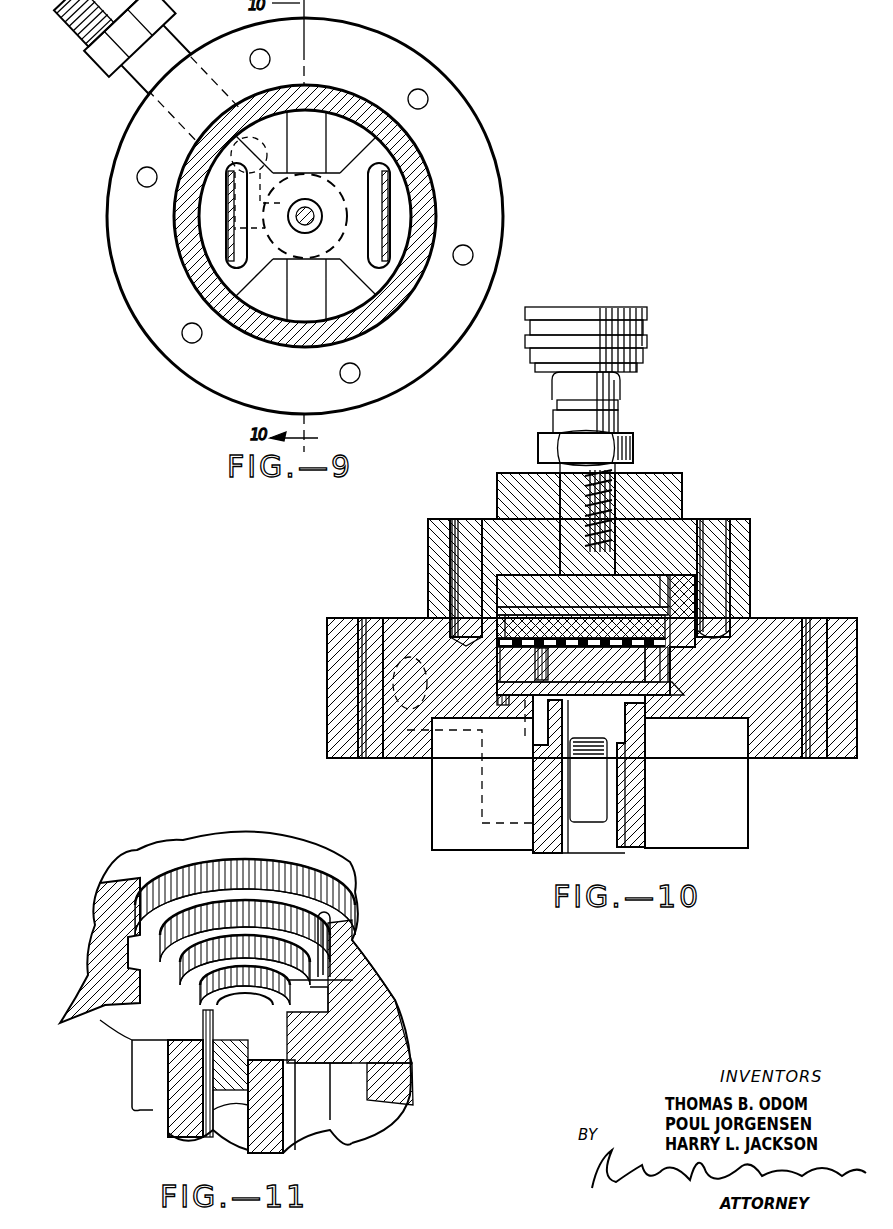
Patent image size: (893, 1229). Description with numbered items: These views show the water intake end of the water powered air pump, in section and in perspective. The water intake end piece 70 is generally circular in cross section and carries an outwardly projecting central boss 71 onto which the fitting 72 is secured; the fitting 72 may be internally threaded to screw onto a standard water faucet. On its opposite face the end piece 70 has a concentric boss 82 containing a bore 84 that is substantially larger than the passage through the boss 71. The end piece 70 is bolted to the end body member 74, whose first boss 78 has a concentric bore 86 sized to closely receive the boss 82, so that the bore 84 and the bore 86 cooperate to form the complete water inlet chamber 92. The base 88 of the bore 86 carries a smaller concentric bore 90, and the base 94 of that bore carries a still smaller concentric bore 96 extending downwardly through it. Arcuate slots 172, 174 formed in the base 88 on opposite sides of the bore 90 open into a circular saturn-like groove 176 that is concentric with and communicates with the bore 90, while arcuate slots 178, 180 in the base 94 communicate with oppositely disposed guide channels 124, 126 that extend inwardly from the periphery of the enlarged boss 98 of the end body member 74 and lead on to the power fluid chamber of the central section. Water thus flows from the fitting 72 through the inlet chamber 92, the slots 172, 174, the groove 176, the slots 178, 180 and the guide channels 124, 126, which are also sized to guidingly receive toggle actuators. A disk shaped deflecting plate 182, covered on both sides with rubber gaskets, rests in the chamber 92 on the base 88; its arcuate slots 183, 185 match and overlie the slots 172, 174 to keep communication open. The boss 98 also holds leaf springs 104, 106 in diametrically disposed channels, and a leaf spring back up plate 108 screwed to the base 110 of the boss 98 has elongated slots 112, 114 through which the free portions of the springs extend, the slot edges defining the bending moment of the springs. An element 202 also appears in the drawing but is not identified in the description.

In FIG. 10, the water intake end piece 70 is at (750, 536).
In FIG. 10, the boss 71 is at (682, 492).
In FIG. 10, the fitting 72 is at (645, 344).
In FIG. 10, the end body member 74 is at (732, 633).
In FIG. 11, the first boss 78 is at (340, 952).
In FIG. 10, the boss 82 is at (514, 601).
In FIG. 10, the bore 84 is at (600, 607).
In FIG. 10, the bore 86 is at (492, 585).
In FIG. 11, the bore 86 is at (160, 882).
In FIG. 10, the base of bore 88 is at (502, 643).
In FIG. 11, the base of bore 88 is at (190, 910).
In FIG. 10, the bore 90 is at (639, 679).
In FIG. 11, the bore 90 is at (188, 912).
In FIG. 10, the water inlet chamber 92 is at (635, 607).
In FIG. 10, the base of bore 94 is at (533, 695).
In FIG. 11, the base of bore 94 is at (233, 988).
In FIG. 10, the bore 96 is at (605, 852).
In FIG. 11, the bore 96 is at (132, 1090).
In FIG. 10, the enlarged boss 98 is at (750, 792).
In FIG. 11, the enlarged boss 98 is at (183, 1137).
In FIG. 9, the leaf spring 104 is at (238, 224).
In FIG. 9, the leaf spring 106 is at (405, 221).
In FIG. 9, the leaf spring back up plate 108 is at (353, 182).
In FIG. 9, the base of boss 110 is at (350, 131).
In FIG. 9, the elongated slot 112 is at (383, 188).
In FIG. 9, the elongated slot 114 is at (238, 190).
In FIG. 9, the guide channel 124 is at (306, 122).
In FIG. 10, the guide channel 124 is at (700, 800).
In FIG. 11, the guide channel 124 is at (336, 1140).
In FIG. 9, the guide channel 126 is at (298, 317).
In FIG. 10, the guide channel 126 is at (468, 800).
In FIG. 11, the guide channel 126 is at (150, 1113).
In FIG. 10, the arcuate slot 172 is at (665, 657).
In FIG. 11, the arcuate slot 172 is at (176, 868).
In FIG. 10, the arcuate slot 174 is at (558, 664).
In FIG. 11, the arcuate slot 174 is at (324, 917).
In FIG. 10, the circular saturn-like groove 176 is at (682, 690).
In FIG. 11, the circular saturn-like groove 176 is at (330, 1013).
In FIG. 10, the arcuate slot 178 is at (627, 720).
In FIG. 11, the arcuate slot 178 is at (158, 1052).
In FIG. 10, the arcuate slot 180 is at (535, 732).
In FIG. 11, the arcuate slot 180 is at (322, 1120).
In FIG. 10, the deflecting plate 182 is at (615, 637).
In FIG. 10, the arcuate slot 183 is at (662, 626).
In FIG. 10, the arcuate slot 185 is at (582, 650).
In FIG. 10, the spring 202 is at (612, 781).
In FIG. 11, the spring 202 is at (232, 1135).